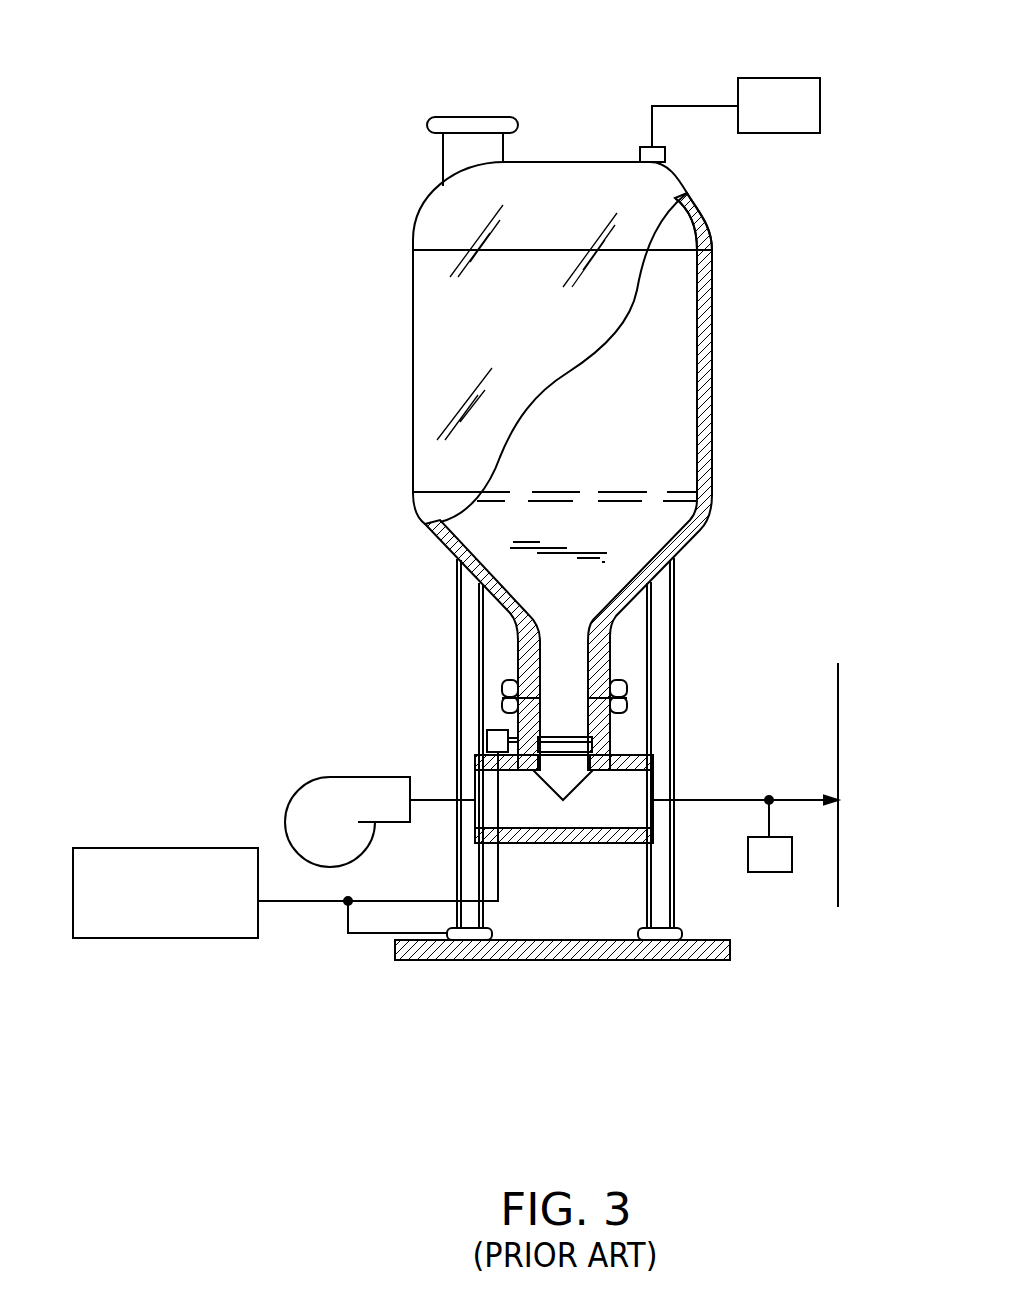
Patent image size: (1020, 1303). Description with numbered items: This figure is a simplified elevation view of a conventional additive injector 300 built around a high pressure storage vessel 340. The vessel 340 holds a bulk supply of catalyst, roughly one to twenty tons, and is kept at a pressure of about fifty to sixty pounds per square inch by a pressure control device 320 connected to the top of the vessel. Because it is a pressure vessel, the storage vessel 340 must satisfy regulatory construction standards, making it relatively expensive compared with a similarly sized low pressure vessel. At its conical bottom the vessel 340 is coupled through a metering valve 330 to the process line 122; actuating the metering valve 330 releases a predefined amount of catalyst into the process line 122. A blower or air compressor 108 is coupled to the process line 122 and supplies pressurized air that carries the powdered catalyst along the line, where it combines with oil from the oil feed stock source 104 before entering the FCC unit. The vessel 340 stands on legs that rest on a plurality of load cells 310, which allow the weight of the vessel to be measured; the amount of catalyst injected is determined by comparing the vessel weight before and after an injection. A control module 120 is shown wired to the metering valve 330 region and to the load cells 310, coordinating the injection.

The additive injector 300 is at (262, 445).
The high pressure storage vessel 340 is at (438, 330).
The pressure control device 320 is at (778, 78).
The metering valve 330 is at (572, 843).
The load cells 310 is at (630, 941).
The blower or air compressor 108 is at (308, 778).
The control module 120 is at (163, 938).
The process line 122 is at (697, 808).
The oil feed stock source 104 is at (777, 872).